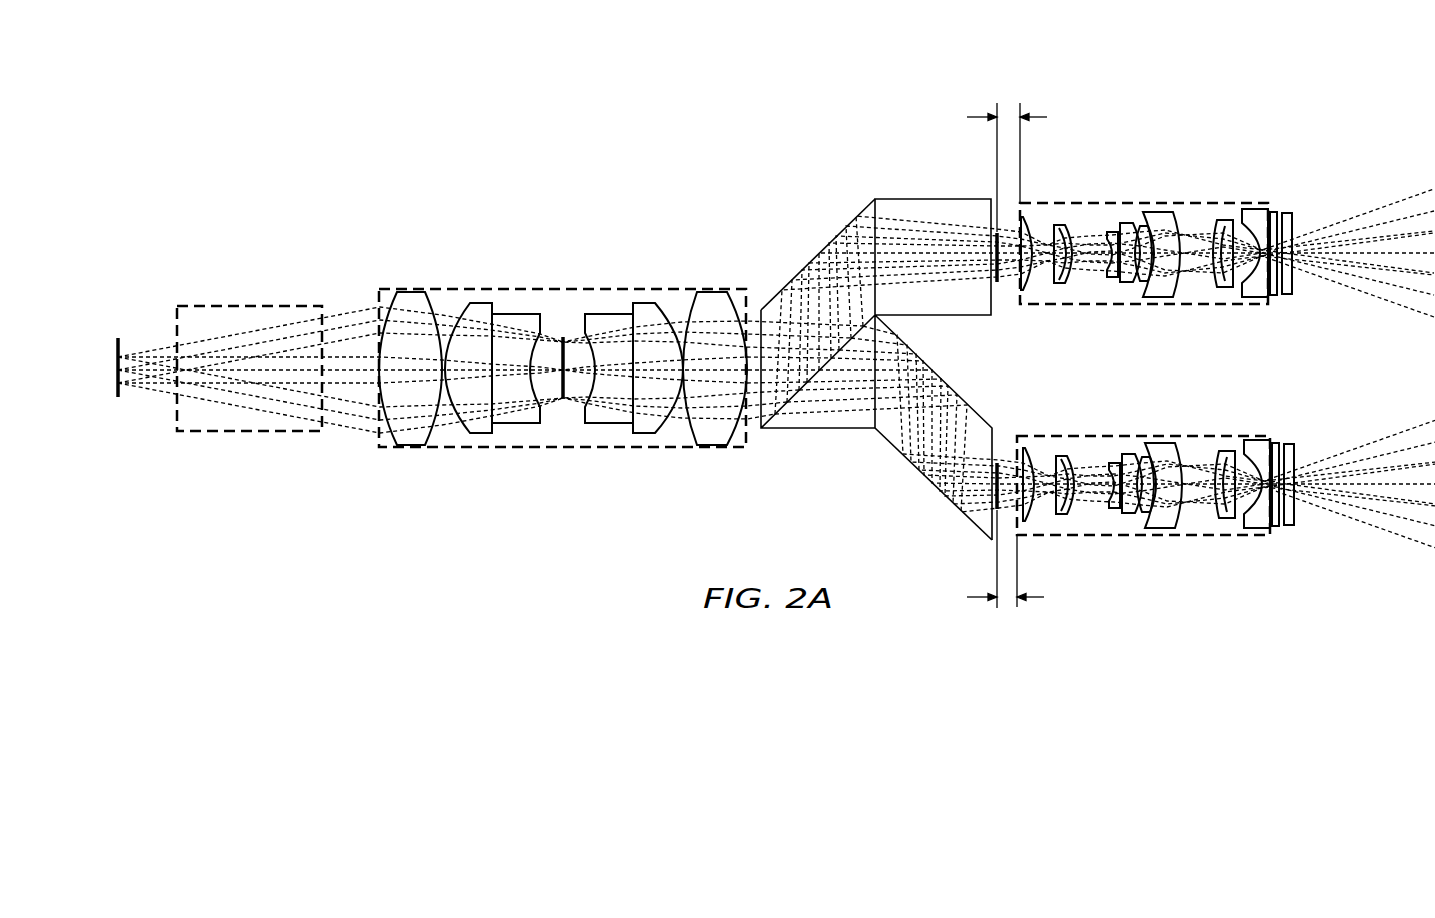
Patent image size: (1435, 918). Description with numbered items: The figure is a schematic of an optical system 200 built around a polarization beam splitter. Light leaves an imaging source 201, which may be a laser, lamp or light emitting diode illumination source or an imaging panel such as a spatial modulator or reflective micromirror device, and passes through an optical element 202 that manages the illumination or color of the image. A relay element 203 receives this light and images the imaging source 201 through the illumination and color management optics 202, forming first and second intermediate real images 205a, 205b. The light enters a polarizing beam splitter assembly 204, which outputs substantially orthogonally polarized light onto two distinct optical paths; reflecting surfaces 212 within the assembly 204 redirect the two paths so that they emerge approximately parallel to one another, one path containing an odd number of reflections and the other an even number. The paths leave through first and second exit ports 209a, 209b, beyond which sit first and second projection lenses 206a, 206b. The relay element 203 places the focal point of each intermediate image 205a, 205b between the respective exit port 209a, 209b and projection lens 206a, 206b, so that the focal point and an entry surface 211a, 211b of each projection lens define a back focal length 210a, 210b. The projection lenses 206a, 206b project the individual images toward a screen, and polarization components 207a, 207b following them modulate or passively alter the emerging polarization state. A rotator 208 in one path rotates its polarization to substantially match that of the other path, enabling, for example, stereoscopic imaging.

The optical system 200 is at (557, 541).
The imaging source 201 is at (119, 338).
The optical element 202 is at (240, 306).
The relay element 203 is at (528, 289).
The polarizing beam splitter assembly 204 is at (820, 429).
The first intermediate image 205a is at (1016, 214).
The second intermediate image 205b is at (1029, 453).
The first projection lens 206a is at (1139, 200).
The second projection lens 206b is at (1148, 452).
The first polarization component 207a is at (1293, 214).
The second polarization component 207b is at (1319, 460).
The rotator 208 is at (1272, 211).
The first exit port 209a is at (996, 214).
The second exit port 209b is at (997, 460).
The first back focal length 210a is at (1010, 110).
The second back focal length 210b is at (1010, 605).
The entry surface of first projection lens 211a is at (1006, 285).
The entry surface of second projection lens 211b is at (1006, 520).
The reflecting surfaces 212 is at (803, 271).